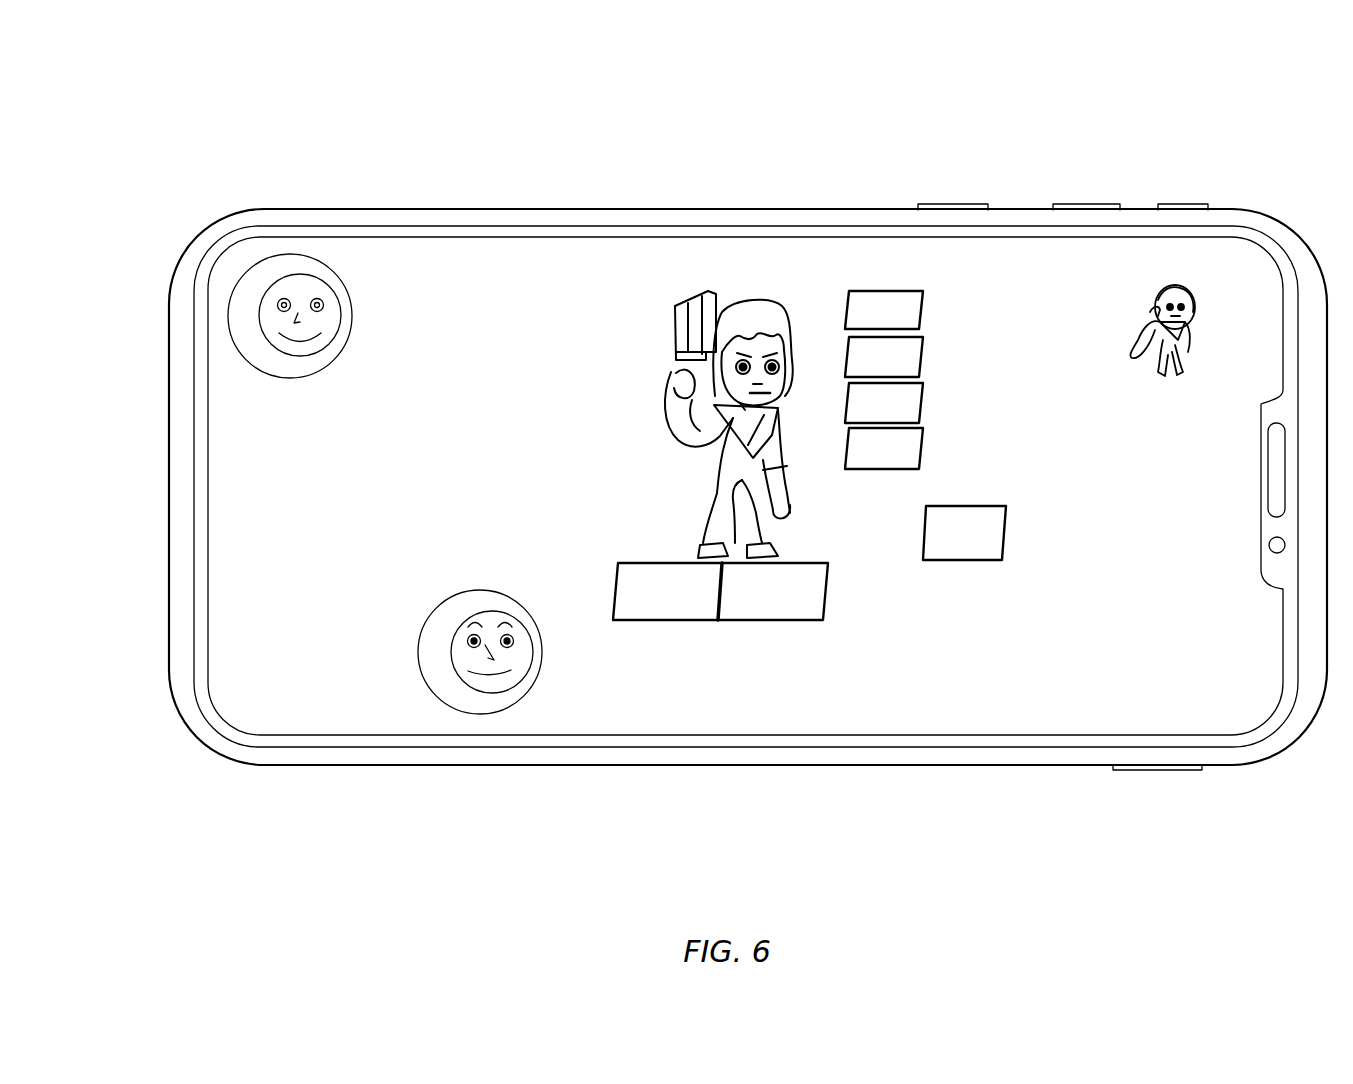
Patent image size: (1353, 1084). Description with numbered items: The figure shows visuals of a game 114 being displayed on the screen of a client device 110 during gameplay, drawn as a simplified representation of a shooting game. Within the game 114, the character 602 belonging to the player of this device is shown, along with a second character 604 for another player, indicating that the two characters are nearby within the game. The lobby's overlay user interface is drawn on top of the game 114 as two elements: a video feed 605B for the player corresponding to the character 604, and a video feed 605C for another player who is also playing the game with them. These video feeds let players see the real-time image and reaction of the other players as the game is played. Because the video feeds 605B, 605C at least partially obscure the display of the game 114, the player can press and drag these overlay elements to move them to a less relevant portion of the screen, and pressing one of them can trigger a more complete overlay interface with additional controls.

The client device 110 is at (843, 210).
The game 114 is at (587, 303).
The character 602 is at (682, 427).
The second character 604 is at (1183, 377).
The video feed 605B is at (237, 325).
The video feed 605C is at (428, 660).